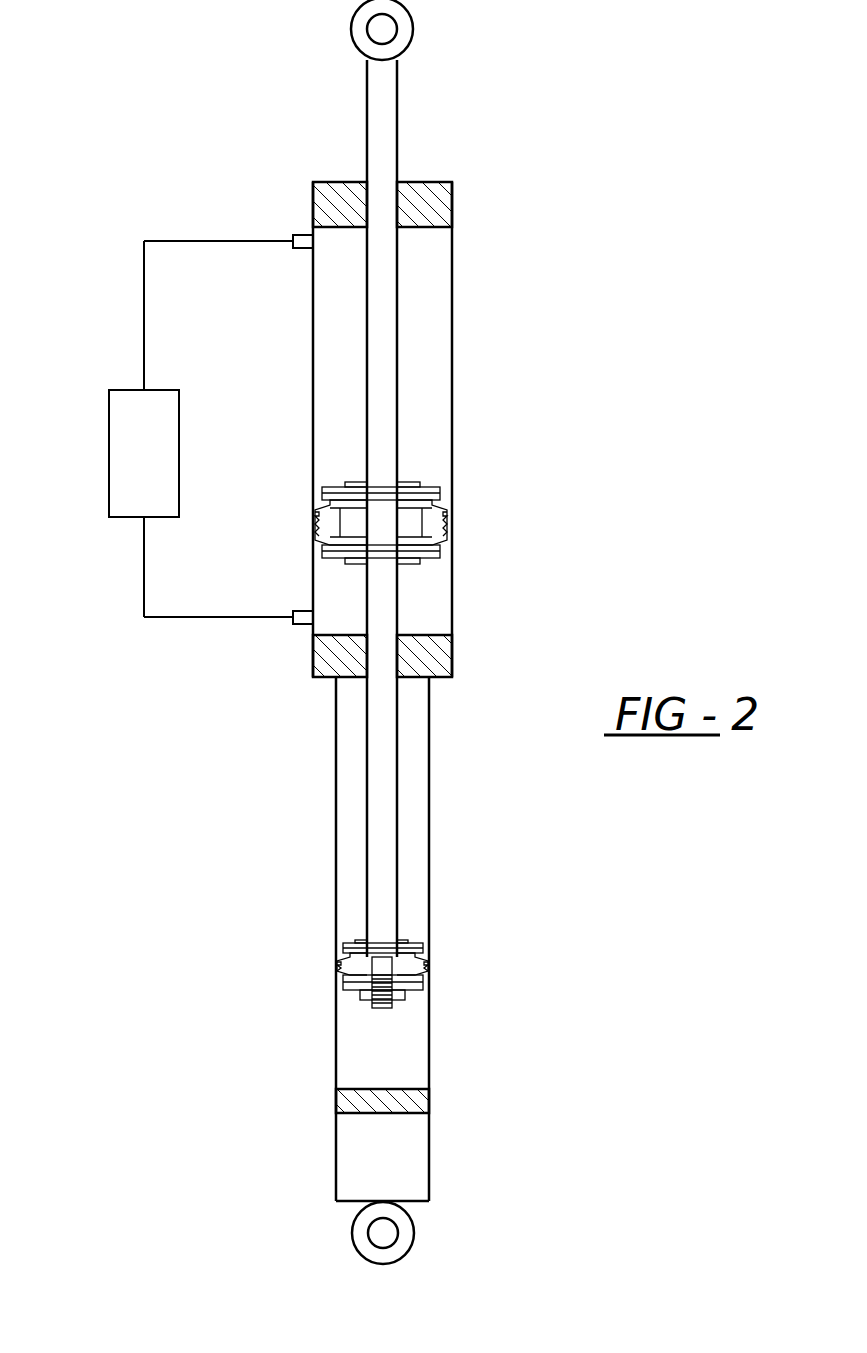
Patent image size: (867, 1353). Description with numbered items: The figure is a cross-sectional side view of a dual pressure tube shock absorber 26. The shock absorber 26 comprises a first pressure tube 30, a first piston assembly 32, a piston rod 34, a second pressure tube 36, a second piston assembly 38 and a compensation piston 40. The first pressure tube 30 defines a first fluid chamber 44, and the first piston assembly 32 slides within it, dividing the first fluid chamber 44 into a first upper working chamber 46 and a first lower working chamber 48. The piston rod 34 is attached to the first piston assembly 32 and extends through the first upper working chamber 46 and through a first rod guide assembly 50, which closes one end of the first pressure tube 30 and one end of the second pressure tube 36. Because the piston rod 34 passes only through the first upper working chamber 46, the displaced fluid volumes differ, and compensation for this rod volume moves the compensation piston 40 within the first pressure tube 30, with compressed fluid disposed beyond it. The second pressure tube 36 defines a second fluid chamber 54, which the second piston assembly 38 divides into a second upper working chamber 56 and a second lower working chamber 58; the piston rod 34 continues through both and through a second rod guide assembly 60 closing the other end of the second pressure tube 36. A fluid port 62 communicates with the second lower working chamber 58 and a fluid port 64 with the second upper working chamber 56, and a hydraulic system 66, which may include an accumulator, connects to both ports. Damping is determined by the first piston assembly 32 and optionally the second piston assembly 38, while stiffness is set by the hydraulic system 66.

The shock absorber 26 is at (201, 86).
The first pressure tube 30 is at (430, 783).
The first piston assembly 32 is at (420, 960).
The piston rod 34 is at (385, 305).
The second pressure tube 36 is at (452, 395).
The second piston assembly 38 is at (449, 513).
The compensation piston 40 is at (430, 1100).
The first fluid chamber 44 is at (355, 847).
The first upper working chamber 46 is at (350, 724).
The first lower working chamber 48 is at (363, 1040).
The first rod guide assembly 50 is at (437, 653).
The second fluid chamber 54 is at (335, 373).
The second upper working chamber 56 is at (317, 273).
The second lower working chamber 58 is at (330, 587).
The second rod guide assembly 60 is at (440, 205).
The fluid port 62 is at (301, 625).
The fluid port 64 is at (302, 234).
The hydraulic system 66 is at (109, 435).